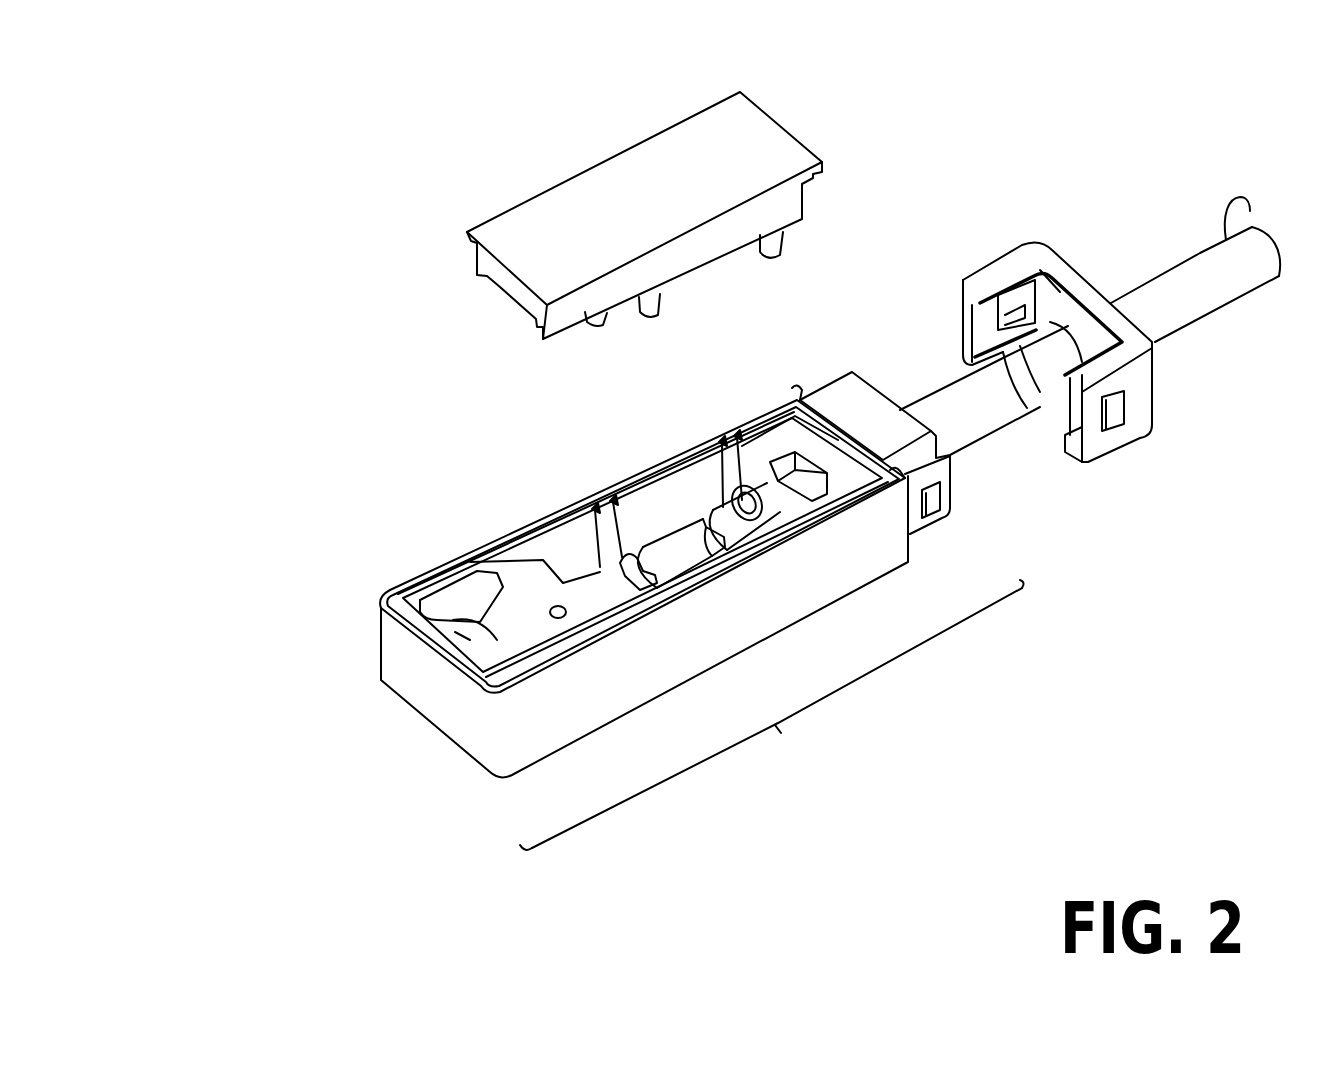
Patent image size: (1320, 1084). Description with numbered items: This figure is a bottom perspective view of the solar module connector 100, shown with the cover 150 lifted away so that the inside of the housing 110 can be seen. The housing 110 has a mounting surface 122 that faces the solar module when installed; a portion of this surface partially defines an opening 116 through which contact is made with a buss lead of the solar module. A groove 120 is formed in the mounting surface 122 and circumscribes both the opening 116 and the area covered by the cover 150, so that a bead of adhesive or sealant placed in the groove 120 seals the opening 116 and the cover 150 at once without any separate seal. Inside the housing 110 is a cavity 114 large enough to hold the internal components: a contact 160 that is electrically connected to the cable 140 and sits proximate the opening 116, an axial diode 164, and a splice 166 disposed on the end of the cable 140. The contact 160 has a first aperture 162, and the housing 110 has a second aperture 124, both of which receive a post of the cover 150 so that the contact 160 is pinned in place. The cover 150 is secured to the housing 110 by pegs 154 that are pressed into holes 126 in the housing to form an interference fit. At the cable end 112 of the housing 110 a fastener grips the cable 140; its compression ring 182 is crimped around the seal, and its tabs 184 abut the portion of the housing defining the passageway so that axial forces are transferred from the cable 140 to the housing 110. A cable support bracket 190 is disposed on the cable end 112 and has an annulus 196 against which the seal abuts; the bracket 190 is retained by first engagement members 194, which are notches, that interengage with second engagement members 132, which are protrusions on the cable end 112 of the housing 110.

The solar module connector 100 is at (232, 142).
The housing 110 is at (772, 715).
The cable end 112 is at (683, 568).
The cavity 114 is at (573, 565).
The opening 116 is at (467, 604).
The groove 120 is at (792, 390).
The mounting surface 122 is at (860, 392).
The second aperture 124 is at (486, 500).
The holes 126 is at (628, 560).
The second engagement members 132 is at (932, 503).
The cable 140 is at (1200, 303).
The cover 150 is at (680, 211).
The pegs 154 is at (777, 266).
The contact 160 is at (453, 620).
The first aperture 162 is at (557, 606).
The axial diode 164 is at (683, 553).
The splice 166 is at (740, 527).
The compression ring 182 is at (787, 490).
The tabs 184 is at (758, 487).
The cable support bracket 190 is at (1090, 321).
The first engagement members 194 is at (1010, 307).
The annulus 196 is at (1067, 320).